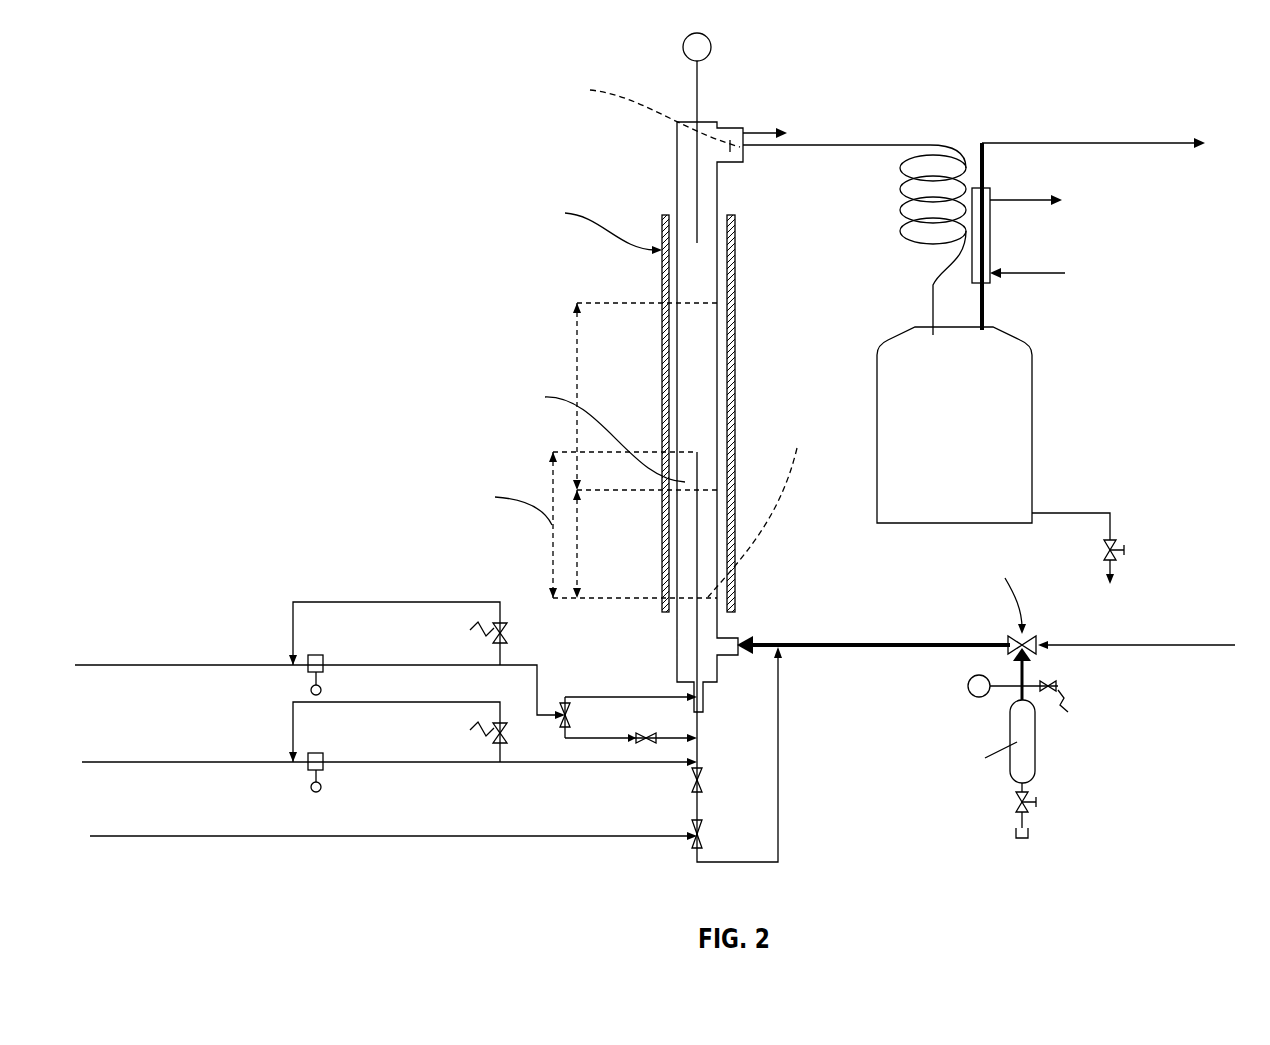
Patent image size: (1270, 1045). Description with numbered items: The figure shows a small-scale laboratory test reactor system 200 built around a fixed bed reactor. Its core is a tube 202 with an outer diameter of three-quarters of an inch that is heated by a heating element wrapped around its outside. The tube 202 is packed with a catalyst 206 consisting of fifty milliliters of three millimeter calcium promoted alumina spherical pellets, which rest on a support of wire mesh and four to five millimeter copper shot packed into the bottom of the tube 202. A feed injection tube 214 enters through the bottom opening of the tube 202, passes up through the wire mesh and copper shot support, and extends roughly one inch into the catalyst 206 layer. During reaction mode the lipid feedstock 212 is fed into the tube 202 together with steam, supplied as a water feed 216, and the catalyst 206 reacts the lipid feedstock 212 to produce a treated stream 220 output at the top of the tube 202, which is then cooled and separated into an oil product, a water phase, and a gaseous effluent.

The reactor system 200 is at (260, 64).
The tube 202 is at (677, 177).
The catalyst 206 is at (692, 335).
The lipid feedstock 212 is at (285, 791).
The feed injection tube 214 is at (690, 607).
The water feed 216 is at (235, 694).
The treated stream 220 is at (828, 147).